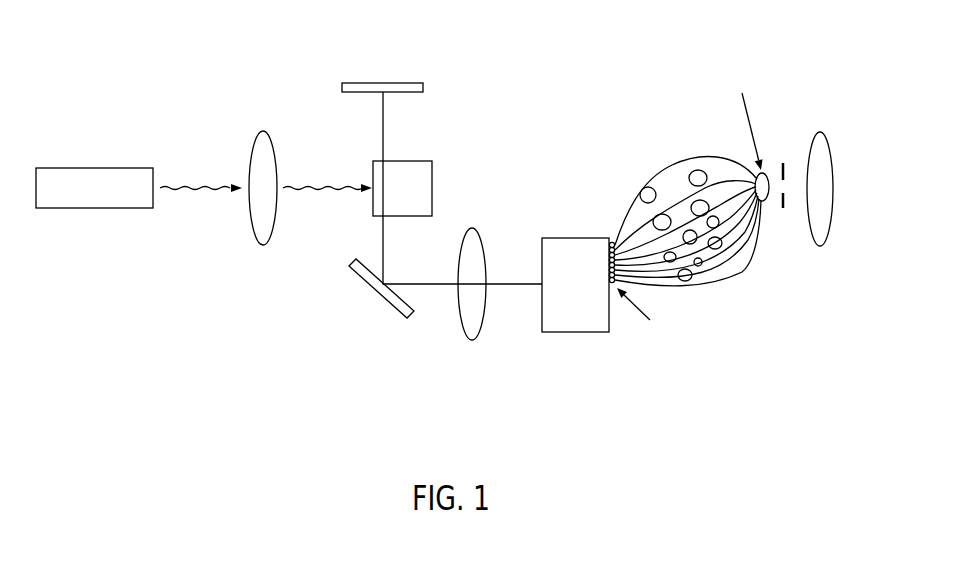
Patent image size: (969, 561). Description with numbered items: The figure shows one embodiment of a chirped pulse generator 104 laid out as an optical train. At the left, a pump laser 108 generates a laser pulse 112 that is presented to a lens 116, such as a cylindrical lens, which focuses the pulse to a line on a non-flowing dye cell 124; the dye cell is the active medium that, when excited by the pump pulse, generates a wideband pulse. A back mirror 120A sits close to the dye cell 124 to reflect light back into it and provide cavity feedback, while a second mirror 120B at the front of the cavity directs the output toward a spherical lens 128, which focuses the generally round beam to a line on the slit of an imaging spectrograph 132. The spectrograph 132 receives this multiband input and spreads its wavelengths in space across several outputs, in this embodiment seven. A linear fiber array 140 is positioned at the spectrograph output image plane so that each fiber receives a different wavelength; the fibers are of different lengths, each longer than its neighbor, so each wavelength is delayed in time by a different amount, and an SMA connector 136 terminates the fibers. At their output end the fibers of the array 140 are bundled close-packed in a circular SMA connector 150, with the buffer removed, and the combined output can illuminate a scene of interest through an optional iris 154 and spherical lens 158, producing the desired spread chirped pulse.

The pulse generator 104 is at (760, 412).
The pump laser 108 is at (76, 168).
The laser pulse 112 is at (180, 188).
The lens 116 is at (250, 140).
The back mirror 120A is at (420, 83).
The second mirror 120B is at (352, 269).
The dye cell 124 is at (410, 161).
The spherical lens 128 is at (461, 242).
The imaging spectrograph 132 is at (553, 238).
The SMA connector 136 is at (618, 313).
The linear fiber array 140 is at (651, 158).
The circular SMA connector 150 is at (766, 175).
The iris 154 is at (783, 208).
The lens 158 is at (821, 246).